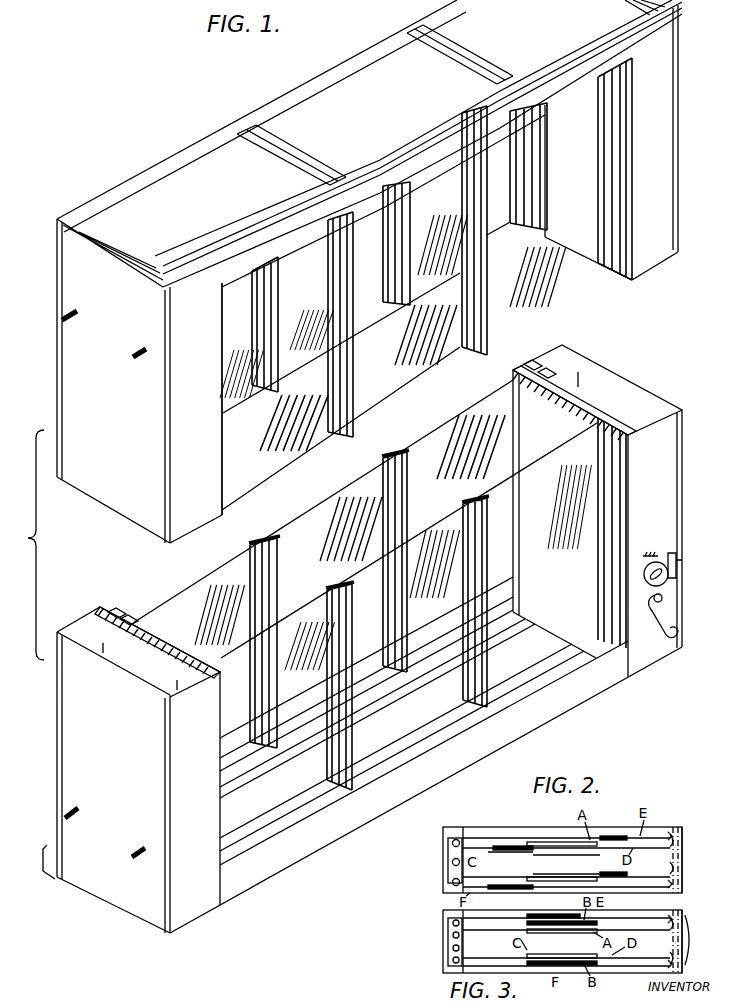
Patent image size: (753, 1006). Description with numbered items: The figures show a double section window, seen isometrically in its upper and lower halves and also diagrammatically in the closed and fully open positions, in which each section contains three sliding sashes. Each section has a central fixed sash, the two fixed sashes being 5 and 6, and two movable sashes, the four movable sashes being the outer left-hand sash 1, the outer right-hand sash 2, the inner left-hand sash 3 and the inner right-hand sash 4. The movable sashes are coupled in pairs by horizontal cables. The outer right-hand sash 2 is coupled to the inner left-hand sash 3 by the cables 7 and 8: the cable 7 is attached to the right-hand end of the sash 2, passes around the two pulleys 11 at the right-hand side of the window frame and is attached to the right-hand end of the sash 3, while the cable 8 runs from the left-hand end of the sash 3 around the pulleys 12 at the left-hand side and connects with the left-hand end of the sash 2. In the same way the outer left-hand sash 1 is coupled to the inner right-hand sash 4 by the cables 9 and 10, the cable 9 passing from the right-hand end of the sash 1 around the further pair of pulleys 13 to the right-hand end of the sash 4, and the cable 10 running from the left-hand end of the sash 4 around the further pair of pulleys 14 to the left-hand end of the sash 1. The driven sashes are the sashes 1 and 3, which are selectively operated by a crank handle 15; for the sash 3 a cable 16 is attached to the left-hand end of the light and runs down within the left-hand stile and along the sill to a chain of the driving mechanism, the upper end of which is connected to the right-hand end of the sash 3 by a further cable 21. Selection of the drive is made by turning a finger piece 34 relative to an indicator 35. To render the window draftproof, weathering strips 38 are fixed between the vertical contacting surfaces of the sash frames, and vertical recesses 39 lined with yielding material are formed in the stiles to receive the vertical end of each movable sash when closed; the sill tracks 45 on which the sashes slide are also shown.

In FIG. 1, the outer left-hand sash 1 is at (185, 603).
In FIG. 2, the outer left-hand sash 1 is at (500, 850).
In FIG. 3, the outer left-hand sash 1 is at (532, 932).
In FIG. 1, the outer right-hand sash 2 is at (477, 414).
In FIG. 2, the outer right-hand sash 2 is at (638, 836).
In FIG. 3, the outer right-hand sash 2 is at (575, 921).
In FIG. 1, the inner left-hand sash 3 is at (313, 445).
In FIG. 2, the inner left-hand sash 3 is at (492, 890).
In FIG. 3, the inner left-hand sash 3 is at (528, 965).
In FIG. 1, the inner right-hand sash 4 is at (548, 277).
In FIG. 2, the inner right-hand sash 4 is at (571, 867).
In FIG. 3, the inner right-hand sash 4 is at (583, 934).
In FIG. 1, the fixed sash 5 is at (317, 515).
In FIG. 2, the fixed sash 5 is at (548, 840).
In FIG. 3, the fixed sash 5 is at (528, 915).
In FIG. 1, the fixed sash 6 is at (410, 372).
In FIG. 2, the fixed sash 6 is at (548, 850).
In FIG. 3, the fixed sash 6 is at (560, 966).
In FIG. 2, the cable 7 is at (668, 861).
In FIG. 3, the cable 7 is at (640, 925).
In FIG. 2, the cable 8 is at (481, 835).
In FIG. 2, the cable 9 is at (580, 848).
In FIG. 2, the cable 10 is at (510, 861).
In FIG. 2, the pulleys 11 is at (676, 827).
In FIG. 3, the pulleys 11 is at (673, 933).
In FIG. 2, the pulleys 12 is at (450, 843).
In FIG. 3, the pulleys 12 is at (450, 923).
In FIG. 2, the pulleys 13 is at (672, 830).
In FIG. 3, the pulleys 13 is at (660, 930).
In FIG. 2, the pulleys 14 is at (450, 875).
In FIG. 3, the pulleys 14 is at (450, 948).
In FIG. 1, the crank handle 15 is at (673, 647).
In FIG. 1, the cable 16 is at (157, 693).
In FIG. 1, the cable 21 is at (657, 410).
In FIG. 1, the finger piece 34 is at (648, 556).
In FIG. 1, the indicator 35 is at (671, 553).
In FIG. 1, the weathering strips 38 is at (262, 540).
In FIG. 1, the vertical recesses 39 is at (553, 378).
In FIG. 1, the sill track 45 is at (527, 607).